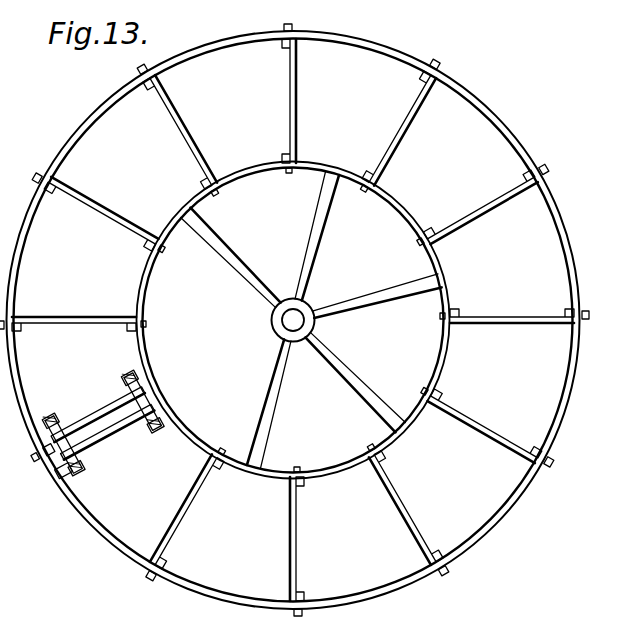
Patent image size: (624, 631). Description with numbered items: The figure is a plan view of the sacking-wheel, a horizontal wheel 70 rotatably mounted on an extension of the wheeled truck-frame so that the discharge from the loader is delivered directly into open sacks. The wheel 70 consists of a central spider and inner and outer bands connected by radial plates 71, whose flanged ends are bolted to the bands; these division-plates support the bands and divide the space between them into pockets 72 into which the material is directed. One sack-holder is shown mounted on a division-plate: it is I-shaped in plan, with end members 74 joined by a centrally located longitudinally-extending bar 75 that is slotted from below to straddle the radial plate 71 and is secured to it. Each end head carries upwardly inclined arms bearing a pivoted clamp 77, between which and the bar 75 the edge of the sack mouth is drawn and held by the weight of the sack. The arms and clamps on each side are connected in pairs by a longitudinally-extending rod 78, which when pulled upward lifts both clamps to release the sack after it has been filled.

The horizontal wheel 70 is at (201, 588).
The radial plate 71 is at (331, 503).
The pocket 72 is at (294, 320).
The end member 74 is at (78, 470).
The longitudinally-extending bar 75 is at (86, 423).
The pivoted clamp 77 is at (125, 433).
The longitudinally-extending rod 78 is at (107, 403).